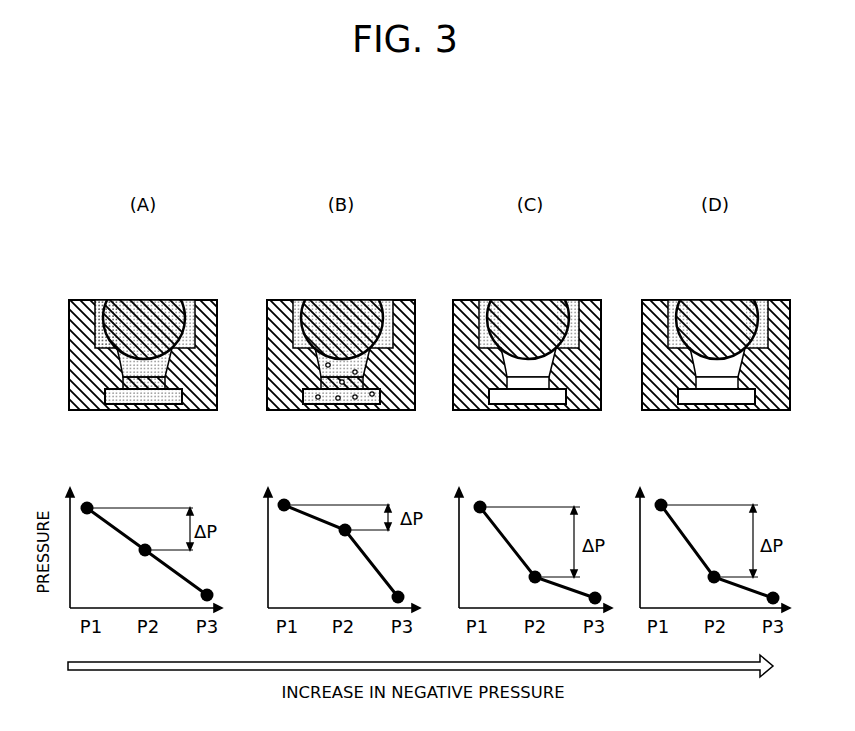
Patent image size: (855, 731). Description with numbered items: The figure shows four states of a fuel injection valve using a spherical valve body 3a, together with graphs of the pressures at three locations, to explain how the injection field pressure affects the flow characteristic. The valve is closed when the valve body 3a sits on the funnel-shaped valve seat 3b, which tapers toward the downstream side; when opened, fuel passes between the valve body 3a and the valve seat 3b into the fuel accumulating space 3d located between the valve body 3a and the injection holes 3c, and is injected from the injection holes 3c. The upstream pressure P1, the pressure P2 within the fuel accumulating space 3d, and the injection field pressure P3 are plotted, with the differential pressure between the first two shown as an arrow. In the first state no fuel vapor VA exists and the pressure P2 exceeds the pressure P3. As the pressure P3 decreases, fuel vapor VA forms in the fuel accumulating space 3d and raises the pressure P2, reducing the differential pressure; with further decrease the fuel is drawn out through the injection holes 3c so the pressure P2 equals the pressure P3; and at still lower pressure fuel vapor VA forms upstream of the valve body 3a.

The valve body 3a is at (150, 302).
The valve seat 3b is at (132, 348).
The injection holes 3c is at (157, 412).
The fuel accumulating space 3d is at (162, 368).
The pressure on upstream side of valve body P1 is at (95, 302).
The pressure within fuel accumulating space P2 is at (130, 393).
The injection field pressure P3 is at (138, 430).
The fuel vapor VA is at (372, 397).